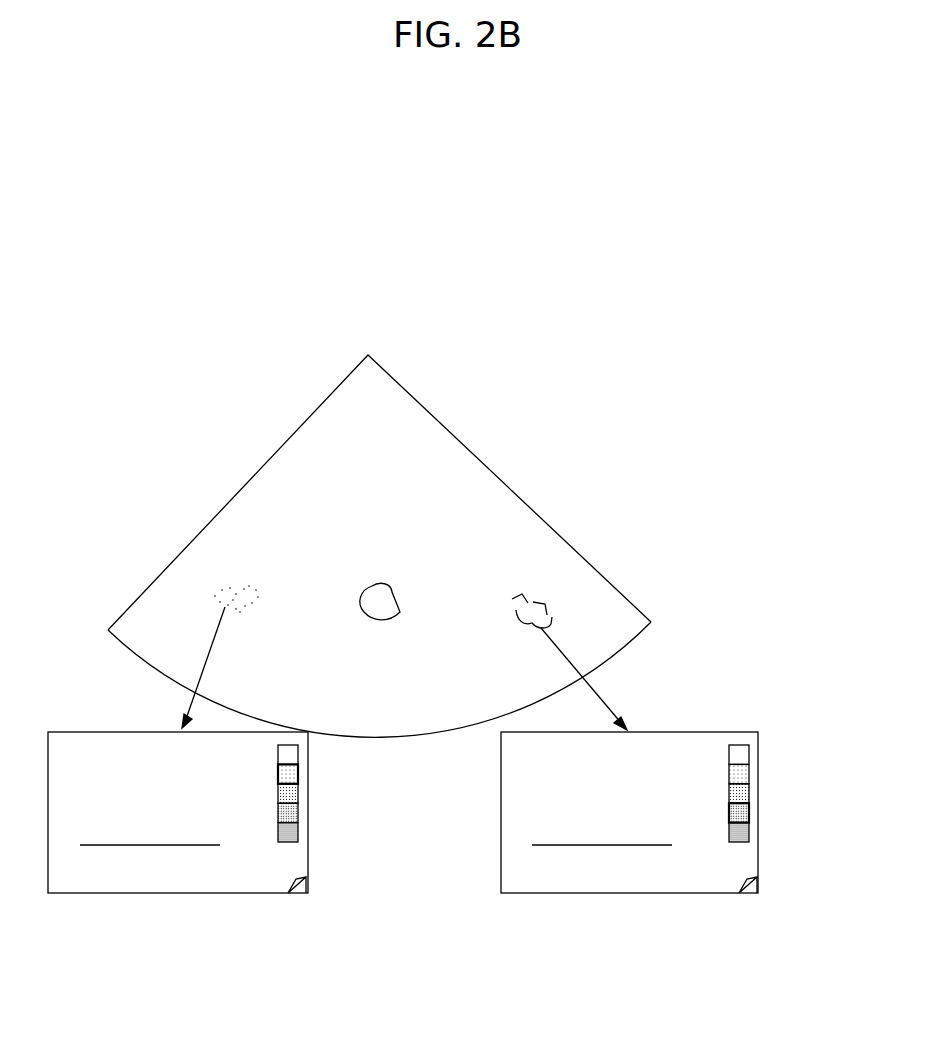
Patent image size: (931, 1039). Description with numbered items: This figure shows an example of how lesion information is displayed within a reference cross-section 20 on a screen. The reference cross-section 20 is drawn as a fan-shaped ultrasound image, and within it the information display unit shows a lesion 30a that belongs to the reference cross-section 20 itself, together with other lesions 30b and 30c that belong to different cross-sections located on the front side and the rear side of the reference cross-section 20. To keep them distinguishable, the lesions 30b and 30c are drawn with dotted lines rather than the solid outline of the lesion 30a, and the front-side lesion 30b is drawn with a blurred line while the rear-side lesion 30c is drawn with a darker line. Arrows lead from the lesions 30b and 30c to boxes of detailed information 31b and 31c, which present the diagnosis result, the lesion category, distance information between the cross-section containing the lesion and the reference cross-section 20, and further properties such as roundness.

The reference cross-section 20 is at (387, 415).
The lesion 30a is at (383, 597).
The lesion 30b is at (232, 598).
The lesion 30c is at (530, 607).
The detailed information 31b is at (287, 857).
The detailed information 31c is at (740, 857).